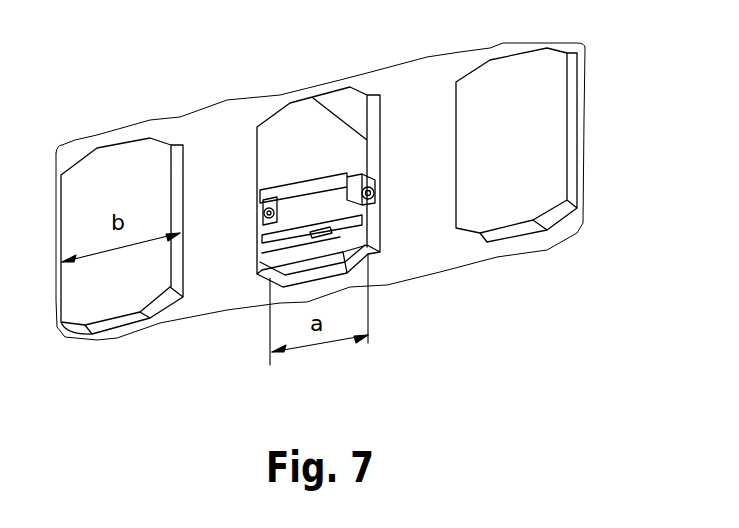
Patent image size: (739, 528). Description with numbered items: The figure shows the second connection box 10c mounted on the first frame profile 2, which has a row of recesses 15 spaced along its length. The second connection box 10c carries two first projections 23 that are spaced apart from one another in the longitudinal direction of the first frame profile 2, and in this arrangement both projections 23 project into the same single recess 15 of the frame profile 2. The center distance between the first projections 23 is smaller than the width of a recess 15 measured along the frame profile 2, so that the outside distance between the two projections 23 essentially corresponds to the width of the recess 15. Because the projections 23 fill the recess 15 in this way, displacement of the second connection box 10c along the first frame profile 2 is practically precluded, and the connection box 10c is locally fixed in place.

The first frame profile 2 is at (410, 83).
The recess 15 is at (120, 162).
The second connection box 10c is at (305, 127).
The first projection 23 is at (363, 177).